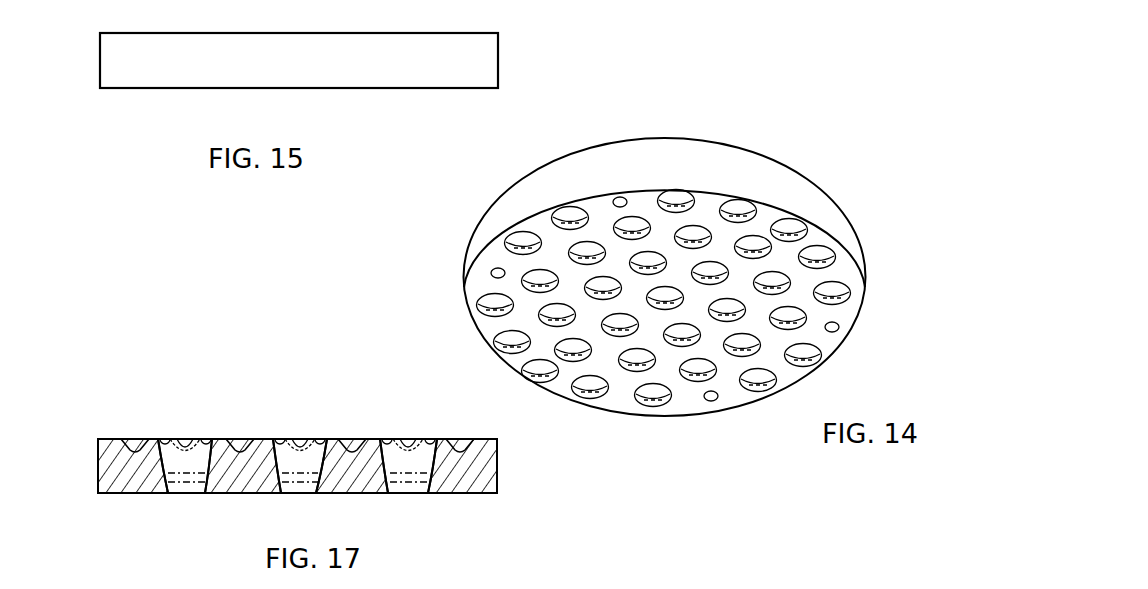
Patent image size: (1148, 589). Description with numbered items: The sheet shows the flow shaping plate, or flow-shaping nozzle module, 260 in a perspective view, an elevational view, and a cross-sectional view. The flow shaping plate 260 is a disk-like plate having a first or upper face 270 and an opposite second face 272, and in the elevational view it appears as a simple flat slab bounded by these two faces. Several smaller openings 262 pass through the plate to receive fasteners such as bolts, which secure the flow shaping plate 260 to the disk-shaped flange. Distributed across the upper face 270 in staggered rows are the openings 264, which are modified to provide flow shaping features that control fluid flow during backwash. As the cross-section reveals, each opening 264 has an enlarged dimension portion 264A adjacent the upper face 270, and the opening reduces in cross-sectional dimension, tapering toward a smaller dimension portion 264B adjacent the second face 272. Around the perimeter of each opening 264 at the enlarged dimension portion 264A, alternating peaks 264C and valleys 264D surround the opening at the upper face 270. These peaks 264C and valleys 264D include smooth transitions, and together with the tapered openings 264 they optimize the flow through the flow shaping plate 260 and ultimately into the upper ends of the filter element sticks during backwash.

In FIG. 15, the flow shaping plate 260 is at (507, 60).
In FIG. 14, the flow shaping plate 260 is at (803, 190).
In FIG. 17, the flow shaping plate 260 is at (500, 480).
In FIG. 14, the openings 262 is at (622, 196).
In FIG. 14, the openings 264 is at (565, 210).
In FIG. 17, the openings 264 is at (177, 462).
In FIG. 17, the enlarged dimension portion 264A is at (163, 440).
In FIG. 14, the smaller dimension portion 264B is at (595, 391).
In FIG. 17, the smaller dimension portion 264B is at (177, 497).
In FIG. 17, the peaks 264C is at (200, 437).
In FIG. 17, the valleys 264D is at (307, 442).
In FIG. 15, the upper face 270 is at (473, 33).
In FIG. 17, the upper face 270 is at (485, 437).
In FIG. 15, the second face 272 is at (143, 92).
In FIG. 14, the second face 272 is at (852, 311).
In FIG. 17, the second face 272 is at (457, 497).